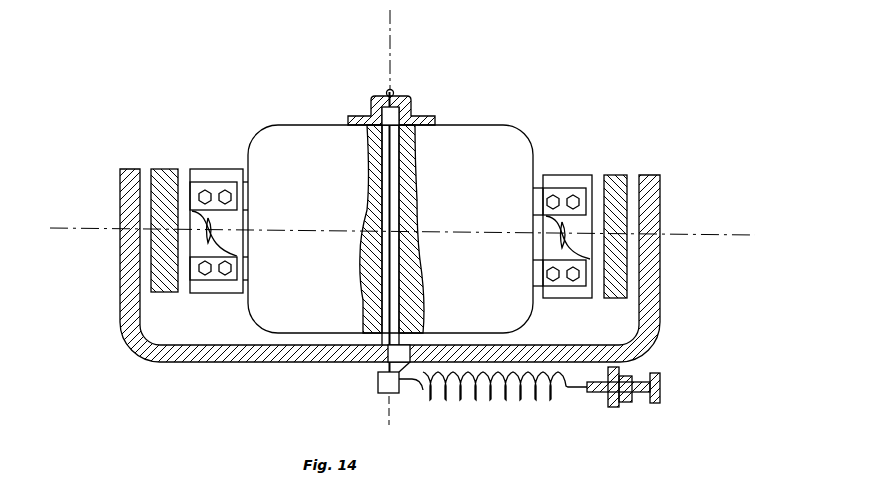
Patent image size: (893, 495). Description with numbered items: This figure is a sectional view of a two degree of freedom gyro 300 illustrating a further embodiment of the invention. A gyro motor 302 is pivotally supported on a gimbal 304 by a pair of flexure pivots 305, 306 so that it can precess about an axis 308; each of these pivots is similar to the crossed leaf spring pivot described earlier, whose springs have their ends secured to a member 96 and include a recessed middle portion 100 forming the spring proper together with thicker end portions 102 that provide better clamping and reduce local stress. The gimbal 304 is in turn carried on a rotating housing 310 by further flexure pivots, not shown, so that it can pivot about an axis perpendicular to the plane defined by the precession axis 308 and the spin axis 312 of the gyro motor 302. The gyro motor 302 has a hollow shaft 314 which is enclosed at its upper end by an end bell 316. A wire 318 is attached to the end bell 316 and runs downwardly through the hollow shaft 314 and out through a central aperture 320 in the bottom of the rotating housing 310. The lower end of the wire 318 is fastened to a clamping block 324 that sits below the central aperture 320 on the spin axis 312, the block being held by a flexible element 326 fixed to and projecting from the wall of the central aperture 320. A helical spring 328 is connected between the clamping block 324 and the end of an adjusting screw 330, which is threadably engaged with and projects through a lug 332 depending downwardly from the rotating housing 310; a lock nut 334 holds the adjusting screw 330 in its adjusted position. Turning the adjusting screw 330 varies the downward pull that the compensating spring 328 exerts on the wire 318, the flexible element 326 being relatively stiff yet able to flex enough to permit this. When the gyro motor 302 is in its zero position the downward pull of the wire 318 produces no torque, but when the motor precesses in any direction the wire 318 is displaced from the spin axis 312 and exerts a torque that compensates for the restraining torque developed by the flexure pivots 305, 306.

The member 96 is at (197, 235).
The recessed middle portion 100 is at (210, 247).
The end portions 102 is at (200, 193).
The two degree of freedom gyro 300 is at (467, 70).
The gyro motor 302 is at (475, 128).
The gimbal 304 is at (620, 175).
The flexure pivot 305 is at (222, 169).
The flexure pivot 306 is at (565, 175).
The axis 308 is at (100, 225).
The rotating housing 310 is at (122, 170).
The spin axis 312 is at (388, 52).
The hollow shaft 314 is at (400, 288).
The end bell 316 is at (407, 93).
The wire 318 is at (392, 225).
The central aperture 320 is at (386, 364).
The clamping block 324 is at (384, 396).
The flexible element 326 is at (413, 387).
The helical spring 328 is at (458, 397).
The adjusting screw 330 is at (662, 380).
The lug 332 is at (613, 407).
The lock nut 334 is at (625, 403).